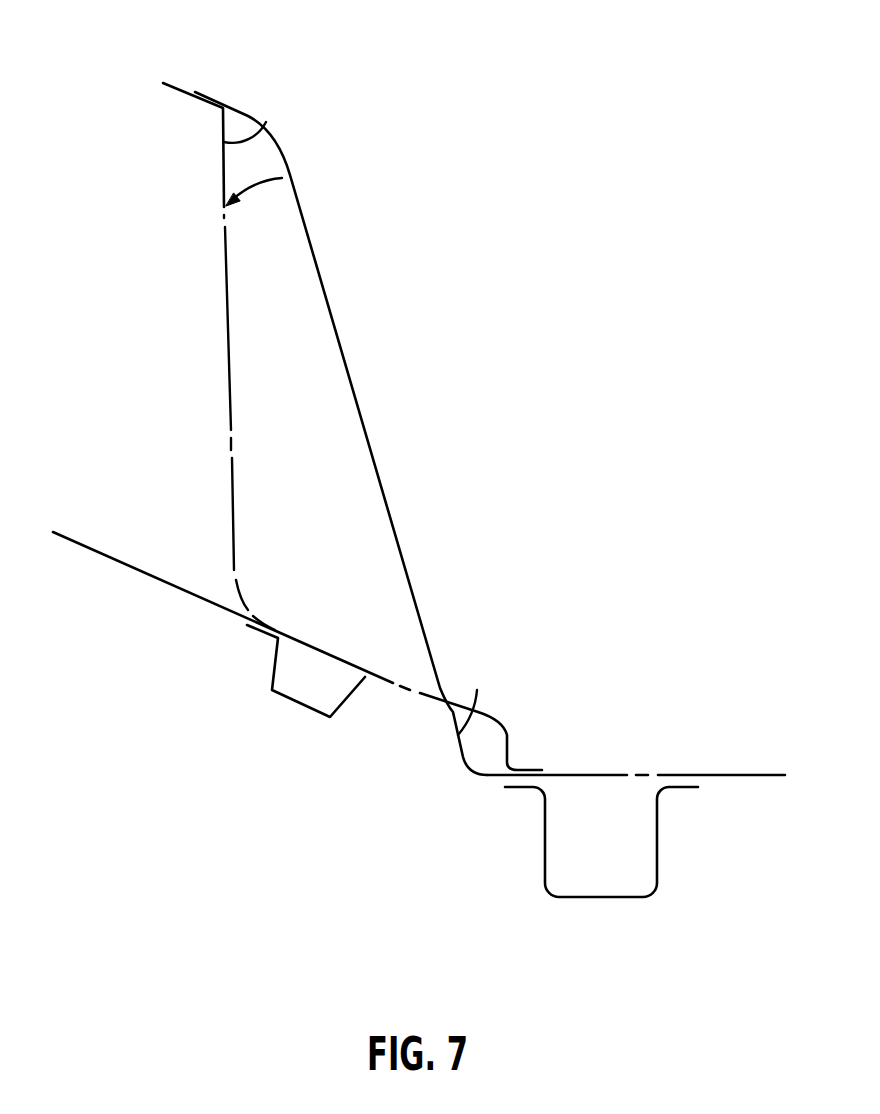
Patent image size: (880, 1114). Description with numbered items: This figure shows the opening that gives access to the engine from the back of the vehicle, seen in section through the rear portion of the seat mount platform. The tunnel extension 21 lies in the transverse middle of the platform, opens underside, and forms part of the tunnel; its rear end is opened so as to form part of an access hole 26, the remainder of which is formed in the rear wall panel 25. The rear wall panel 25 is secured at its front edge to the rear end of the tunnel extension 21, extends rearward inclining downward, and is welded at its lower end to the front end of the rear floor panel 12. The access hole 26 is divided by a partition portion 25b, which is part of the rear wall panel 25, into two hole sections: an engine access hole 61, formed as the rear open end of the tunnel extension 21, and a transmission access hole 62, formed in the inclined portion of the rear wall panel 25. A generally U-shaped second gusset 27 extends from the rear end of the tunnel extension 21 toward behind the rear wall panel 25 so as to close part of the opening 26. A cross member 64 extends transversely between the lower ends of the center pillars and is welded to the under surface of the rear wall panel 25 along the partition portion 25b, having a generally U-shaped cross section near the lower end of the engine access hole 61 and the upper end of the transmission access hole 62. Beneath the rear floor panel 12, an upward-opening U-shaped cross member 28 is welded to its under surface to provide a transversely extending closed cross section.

The tunnel extension 21 is at (185, 92).
The engine access hole 61 is at (270, 110).
The access hole 26 is at (288, 180).
The second gusset 27 is at (352, 382).
The rear floor panel 12 is at (725, 778).
The rear wall panel 25 is at (118, 560).
The partition portion 25b is at (342, 660).
The transmission access hole 62 is at (478, 683).
The cross member 64 is at (343, 703).
The U-shaped cross member 28 is at (658, 837).